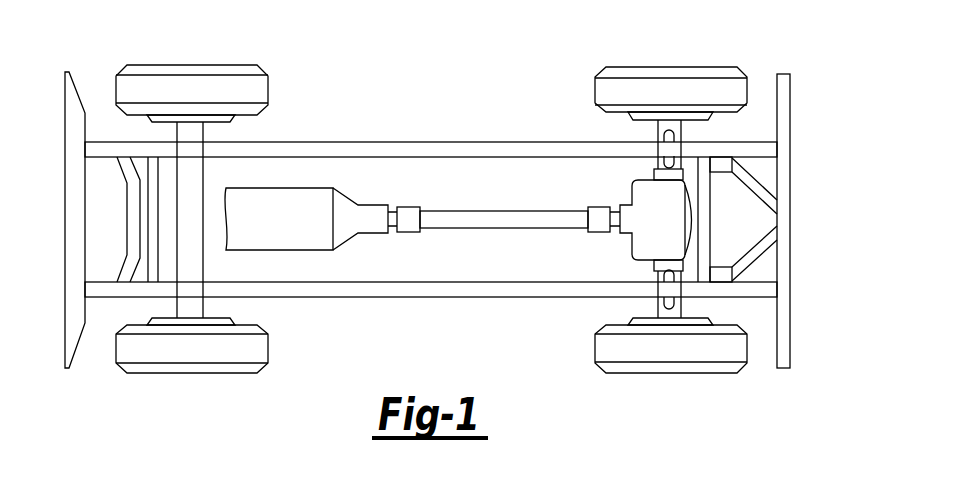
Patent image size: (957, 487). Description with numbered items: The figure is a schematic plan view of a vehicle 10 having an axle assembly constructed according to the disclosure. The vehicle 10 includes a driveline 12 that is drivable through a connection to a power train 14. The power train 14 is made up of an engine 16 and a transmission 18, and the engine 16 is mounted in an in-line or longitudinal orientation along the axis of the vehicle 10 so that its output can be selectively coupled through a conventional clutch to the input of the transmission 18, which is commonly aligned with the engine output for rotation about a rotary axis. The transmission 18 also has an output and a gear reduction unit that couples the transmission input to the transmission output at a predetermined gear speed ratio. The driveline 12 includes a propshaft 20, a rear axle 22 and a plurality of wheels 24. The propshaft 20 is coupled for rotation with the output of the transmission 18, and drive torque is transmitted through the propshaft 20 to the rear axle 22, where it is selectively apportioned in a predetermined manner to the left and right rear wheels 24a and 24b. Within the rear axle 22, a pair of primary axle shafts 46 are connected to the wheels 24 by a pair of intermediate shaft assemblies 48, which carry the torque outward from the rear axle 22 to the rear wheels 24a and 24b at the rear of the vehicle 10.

The vehicle 10 is at (382, 83).
The driveline 12 is at (685, 192).
The power train 14 is at (292, 261).
The engine 16 is at (295, 260).
The transmission 18 is at (378, 204).
The propshaft 20 is at (518, 212).
The rear axle 22 is at (631, 256).
The wheels 24 is at (676, 192).
The left rear wheel 24a is at (607, 345).
The right rear wheel 24b is at (597, 82).
The primary axle shafts 46 is at (681, 173).
The intermediate shaft assemblies 48 is at (678, 137).